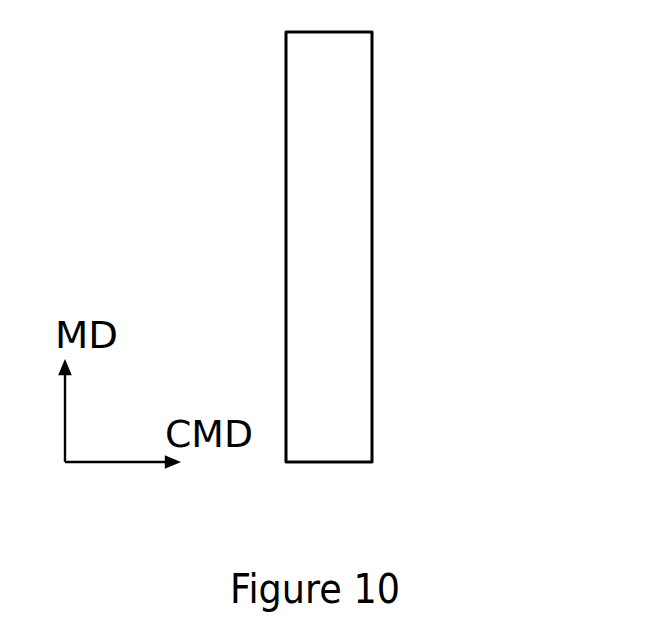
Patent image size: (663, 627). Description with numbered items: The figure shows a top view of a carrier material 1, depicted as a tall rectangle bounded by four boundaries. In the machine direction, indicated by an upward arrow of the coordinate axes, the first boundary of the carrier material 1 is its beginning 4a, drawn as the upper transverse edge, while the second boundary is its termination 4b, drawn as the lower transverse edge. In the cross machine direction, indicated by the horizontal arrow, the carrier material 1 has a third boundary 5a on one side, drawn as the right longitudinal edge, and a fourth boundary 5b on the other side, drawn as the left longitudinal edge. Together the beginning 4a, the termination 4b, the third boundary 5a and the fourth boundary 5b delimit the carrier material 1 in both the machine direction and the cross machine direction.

The carrier material 1 is at (443, 140).
The beginning 4a is at (323, 32).
The termination 4b is at (345, 462).
The third boundary 5a is at (372, 298).
The fourth boundary 5b is at (284, 253).